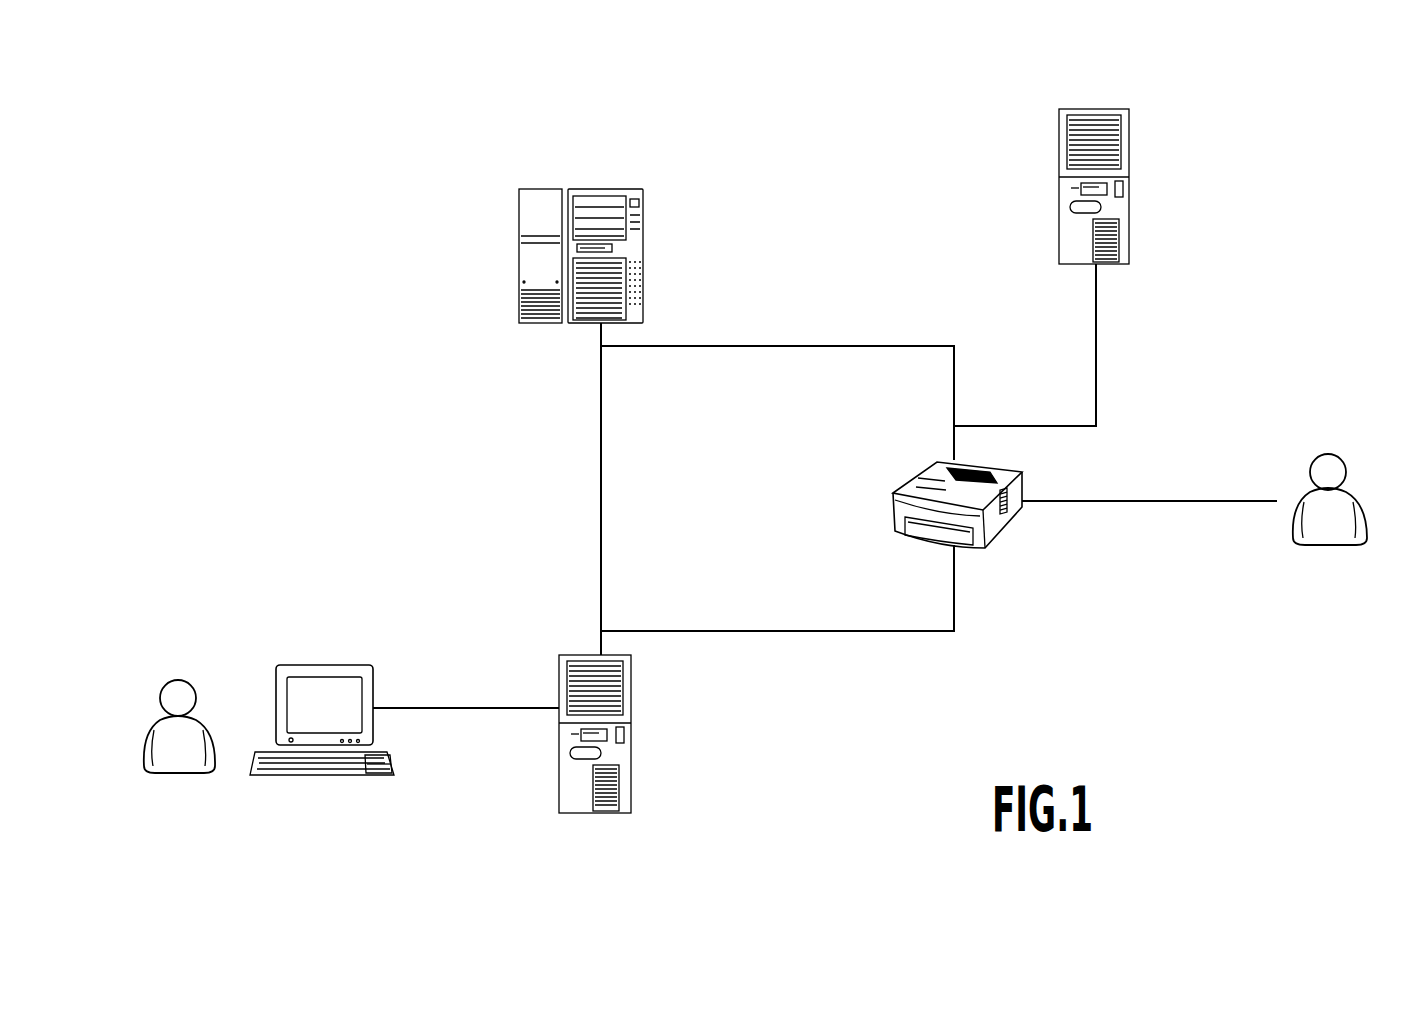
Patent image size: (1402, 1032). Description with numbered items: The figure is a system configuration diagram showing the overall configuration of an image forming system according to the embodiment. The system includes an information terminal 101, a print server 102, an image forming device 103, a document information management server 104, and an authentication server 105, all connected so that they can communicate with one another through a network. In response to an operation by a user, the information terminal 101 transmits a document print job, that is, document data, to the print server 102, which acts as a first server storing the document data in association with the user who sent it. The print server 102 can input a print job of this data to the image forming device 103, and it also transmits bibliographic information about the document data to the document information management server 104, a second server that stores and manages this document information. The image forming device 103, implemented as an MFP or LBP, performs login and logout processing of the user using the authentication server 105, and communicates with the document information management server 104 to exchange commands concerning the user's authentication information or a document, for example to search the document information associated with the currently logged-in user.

The information terminal 101 is at (325, 664).
The print server 102 is at (631, 719).
The image forming device 103 is at (1000, 528).
The document information management server 104 is at (643, 237).
The authentication server 105 is at (1129, 189).